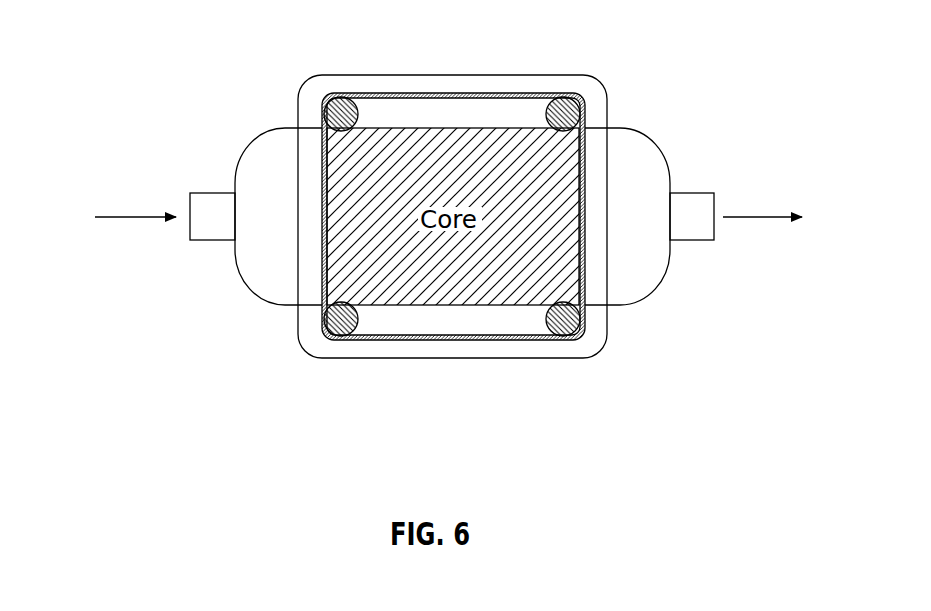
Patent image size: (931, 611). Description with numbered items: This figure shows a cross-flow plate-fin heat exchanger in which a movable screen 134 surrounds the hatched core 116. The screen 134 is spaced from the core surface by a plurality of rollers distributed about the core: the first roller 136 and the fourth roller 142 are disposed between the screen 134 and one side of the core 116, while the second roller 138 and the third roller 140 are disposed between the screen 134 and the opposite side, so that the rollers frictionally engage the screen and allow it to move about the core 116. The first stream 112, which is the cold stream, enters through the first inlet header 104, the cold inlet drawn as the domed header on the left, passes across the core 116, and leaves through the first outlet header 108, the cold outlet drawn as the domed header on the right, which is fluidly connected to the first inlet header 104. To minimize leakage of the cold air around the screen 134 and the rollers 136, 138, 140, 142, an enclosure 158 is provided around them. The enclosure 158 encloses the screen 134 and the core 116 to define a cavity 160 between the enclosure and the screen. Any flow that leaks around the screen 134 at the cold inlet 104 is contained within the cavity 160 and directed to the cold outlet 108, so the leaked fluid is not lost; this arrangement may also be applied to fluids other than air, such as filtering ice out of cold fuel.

The first inlet header 104 is at (240, 270).
The first outlet header 108 is at (635, 270).
The first stream 112 is at (118, 215).
The core 116 is at (309, 388).
The screen 134 is at (488, 92).
The first roller 136 is at (581, 107).
The second roller 138 is at (583, 322).
The third roller 140 is at (323, 322).
The fourth roller 142 is at (326, 106).
The enclosure 158 is at (412, 75).
The cavity 160 is at (524, 85).